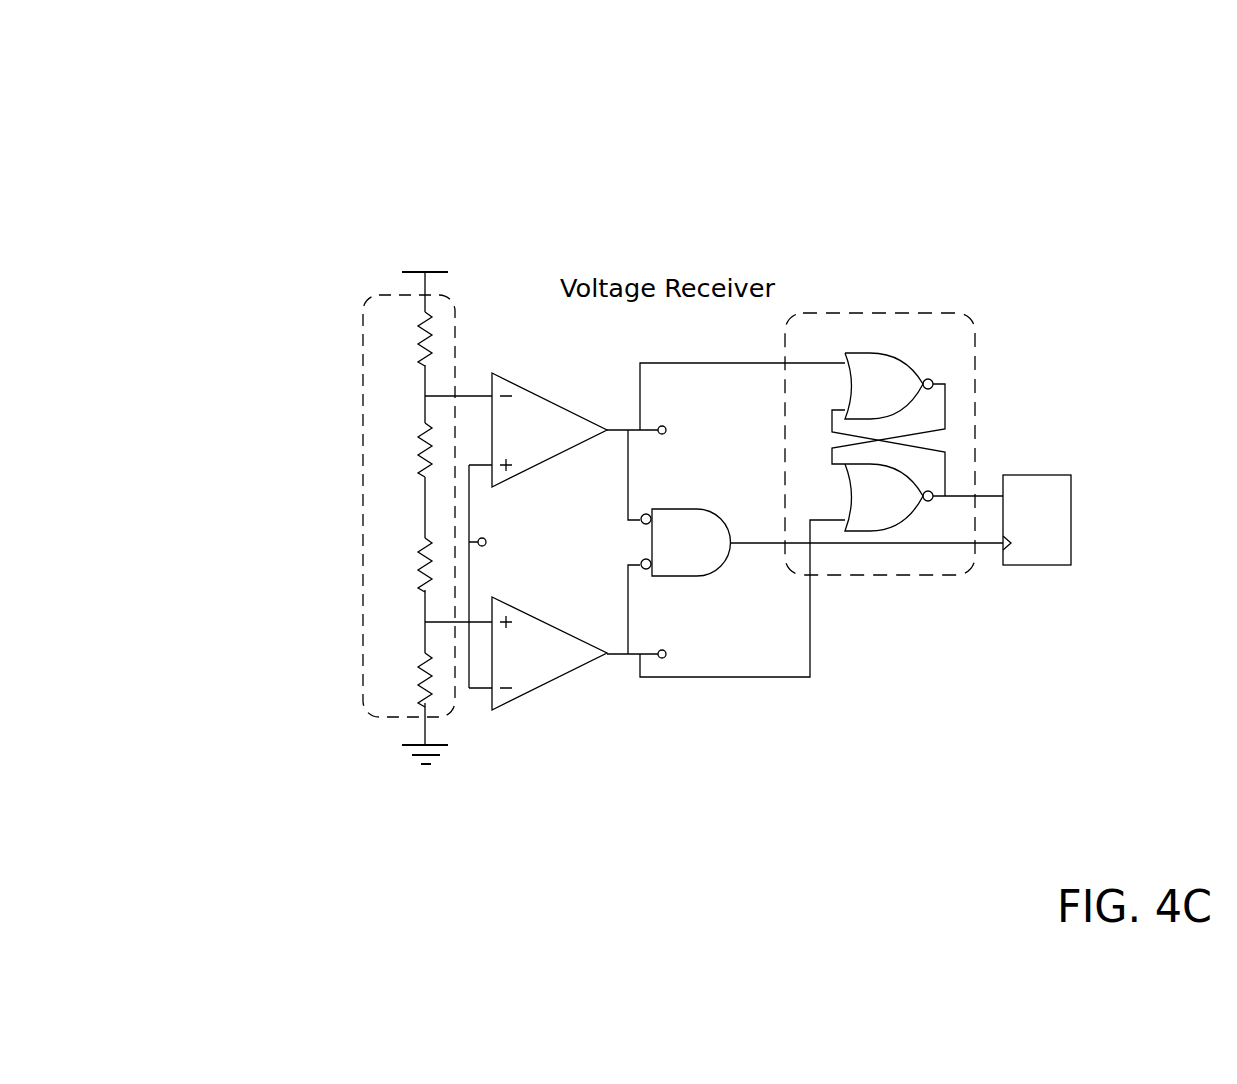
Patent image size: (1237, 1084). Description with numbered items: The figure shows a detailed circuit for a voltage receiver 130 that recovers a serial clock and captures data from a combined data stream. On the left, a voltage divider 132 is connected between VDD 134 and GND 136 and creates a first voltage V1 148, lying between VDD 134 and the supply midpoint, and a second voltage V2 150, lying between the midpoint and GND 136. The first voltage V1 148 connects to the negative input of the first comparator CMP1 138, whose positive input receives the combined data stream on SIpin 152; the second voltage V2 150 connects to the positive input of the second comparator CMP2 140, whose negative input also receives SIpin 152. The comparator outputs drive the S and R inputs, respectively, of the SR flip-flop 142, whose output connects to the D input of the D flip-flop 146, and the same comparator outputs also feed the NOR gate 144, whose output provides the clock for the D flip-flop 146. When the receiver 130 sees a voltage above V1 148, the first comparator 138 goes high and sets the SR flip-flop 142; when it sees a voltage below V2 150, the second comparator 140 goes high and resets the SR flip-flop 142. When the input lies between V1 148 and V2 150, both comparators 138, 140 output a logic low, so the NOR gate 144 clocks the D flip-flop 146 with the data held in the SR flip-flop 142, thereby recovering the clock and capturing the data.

The voltage receiver 130 is at (663, 456).
The voltage divider 132 is at (367, 503).
The VDD 134 is at (472, 239).
The GND 136 is at (464, 775).
The first comparator CMP1 138 is at (668, 420).
The second comparator CMP2 140 is at (668, 615).
The SR flip-flop 142 is at (922, 437).
The NOR gate 144 is at (822, 520).
The D flip-flop 146 is at (1073, 490).
The first voltage V1 148 is at (370, 406).
The second voltage V2 150 is at (377, 629).
The SIpin 152 is at (523, 576).